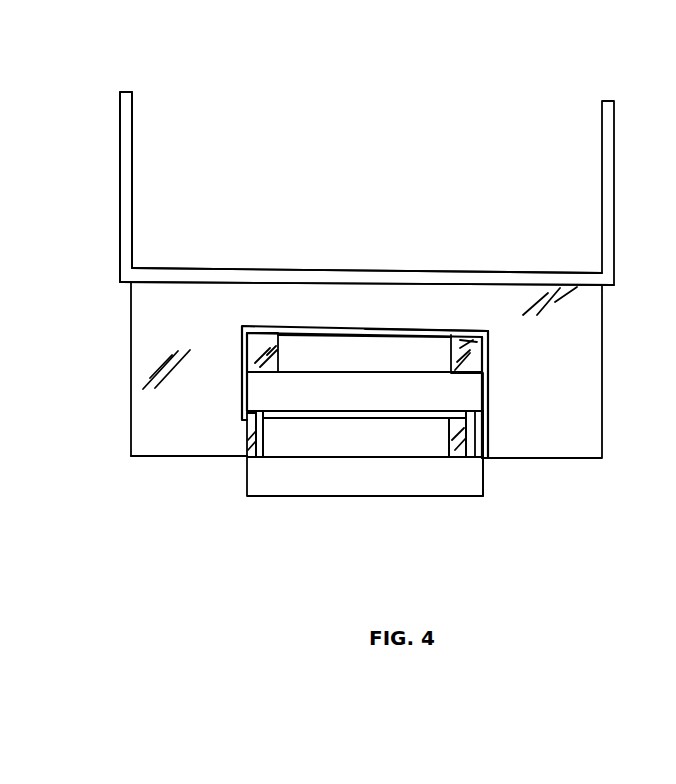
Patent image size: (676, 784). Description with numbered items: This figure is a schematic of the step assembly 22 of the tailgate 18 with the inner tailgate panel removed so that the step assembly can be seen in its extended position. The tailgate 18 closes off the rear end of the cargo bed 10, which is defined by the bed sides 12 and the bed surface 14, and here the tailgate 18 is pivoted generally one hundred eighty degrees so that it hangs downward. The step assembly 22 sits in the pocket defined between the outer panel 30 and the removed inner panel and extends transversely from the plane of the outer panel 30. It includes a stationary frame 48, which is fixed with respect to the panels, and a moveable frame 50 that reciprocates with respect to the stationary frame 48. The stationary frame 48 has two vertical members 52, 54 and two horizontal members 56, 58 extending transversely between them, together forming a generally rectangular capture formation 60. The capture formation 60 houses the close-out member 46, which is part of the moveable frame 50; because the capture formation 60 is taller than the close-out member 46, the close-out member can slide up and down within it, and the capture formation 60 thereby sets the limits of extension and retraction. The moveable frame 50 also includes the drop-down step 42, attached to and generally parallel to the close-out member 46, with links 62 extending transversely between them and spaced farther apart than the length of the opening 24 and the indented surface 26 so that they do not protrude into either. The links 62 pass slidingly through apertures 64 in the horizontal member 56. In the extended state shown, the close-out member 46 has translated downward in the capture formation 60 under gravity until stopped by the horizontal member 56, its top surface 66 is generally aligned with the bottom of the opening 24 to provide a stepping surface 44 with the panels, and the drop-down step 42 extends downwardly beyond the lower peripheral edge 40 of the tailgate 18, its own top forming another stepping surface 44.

The cargo bed 10 is at (128, 90).
The bed sides 12 is at (132, 121).
The bed surface 14 is at (208, 267).
The tailgate 18 is at (153, 305).
The step assembly 22 is at (266, 585).
The opening 24 is at (358, 352).
The indented surface 26 is at (448, 444).
The outer panel 30 is at (580, 320).
The lower peripheral edge 40 is at (145, 458).
The drop-down step 42 is at (468, 497).
The stepping surface 44 is at (412, 452).
The close-out member 46 is at (308, 372).
The stationary frame 48 is at (287, 327).
The moveable frame 50 is at (378, 487).
The vertical member 52 is at (245, 378).
The vertical member 54 is at (490, 378).
The horizontal member 56 is at (328, 428).
The horizontal member 58 is at (397, 328).
The capture formation 60 is at (487, 332).
The links 62 is at (256, 430).
The apertures 64 is at (255, 420).
The top surface 66 is at (420, 372).